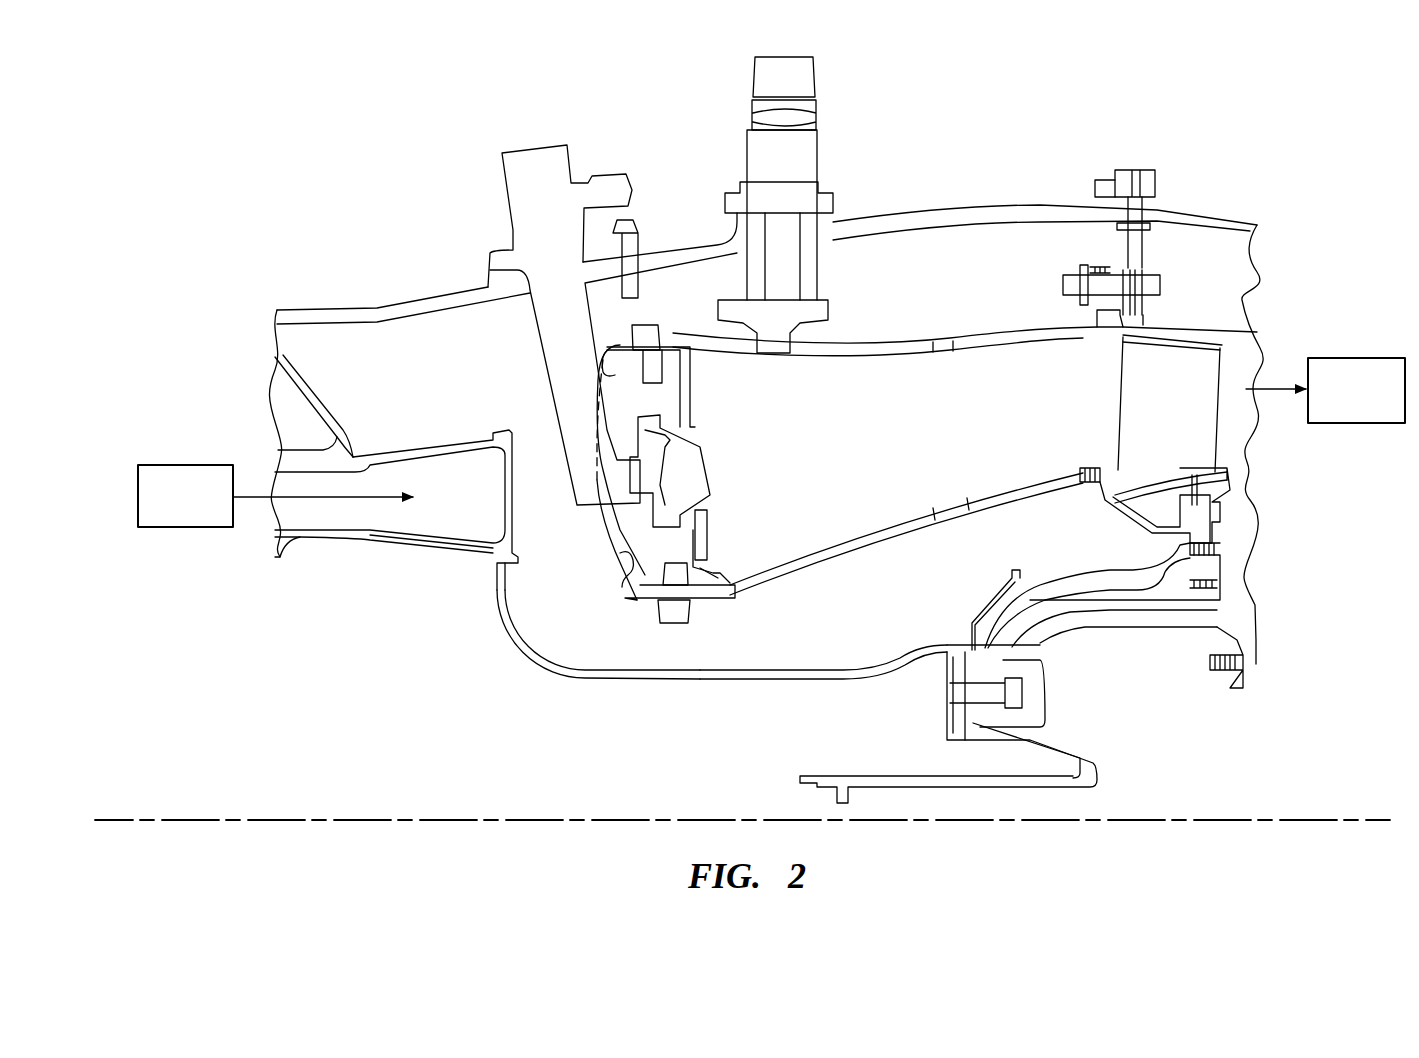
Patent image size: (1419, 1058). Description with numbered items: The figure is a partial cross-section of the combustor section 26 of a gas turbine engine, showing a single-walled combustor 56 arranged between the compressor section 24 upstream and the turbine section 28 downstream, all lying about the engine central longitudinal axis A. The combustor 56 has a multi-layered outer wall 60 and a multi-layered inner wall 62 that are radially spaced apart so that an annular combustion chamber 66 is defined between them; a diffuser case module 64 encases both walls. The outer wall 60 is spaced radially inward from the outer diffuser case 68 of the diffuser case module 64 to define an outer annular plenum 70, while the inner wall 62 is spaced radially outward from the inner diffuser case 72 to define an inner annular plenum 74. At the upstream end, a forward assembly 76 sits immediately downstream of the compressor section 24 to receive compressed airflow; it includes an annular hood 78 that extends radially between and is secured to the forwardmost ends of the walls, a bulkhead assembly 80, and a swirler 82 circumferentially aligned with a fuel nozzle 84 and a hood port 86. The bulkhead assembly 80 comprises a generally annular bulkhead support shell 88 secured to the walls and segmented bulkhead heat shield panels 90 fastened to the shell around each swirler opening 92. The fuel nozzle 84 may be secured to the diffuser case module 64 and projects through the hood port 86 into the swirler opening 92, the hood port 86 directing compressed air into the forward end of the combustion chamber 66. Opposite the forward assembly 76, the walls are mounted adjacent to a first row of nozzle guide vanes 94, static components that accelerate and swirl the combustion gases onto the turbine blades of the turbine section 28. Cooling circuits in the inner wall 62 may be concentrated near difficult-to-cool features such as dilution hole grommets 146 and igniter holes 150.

The compressor section 24 is at (199, 509).
The combustor section 26 is at (1180, 107).
The turbine section 28 is at (1370, 402).
The combustor 56 is at (1095, 128).
The outer wall 60 is at (985, 337).
The inner wall 62 is at (875, 537).
The diffuser case module 64 is at (943, 205).
The annular combustion chamber 66 is at (926, 463).
The outer diffuser case 68 is at (1035, 207).
The outer annular plenum 70 is at (883, 275).
The inner diffuser case 72 is at (795, 692).
The inner annular plenum 74 is at (859, 646).
The forward assembly 76 is at (618, 612).
The annular hood 78 is at (627, 567).
The bulkhead assembly 80 is at (707, 403).
The swirler 82 is at (714, 432).
The fuel nozzle 84 is at (565, 278).
The hood port 86 is at (610, 543).
The bulkhead support shell 88 is at (627, 587).
The bulkhead heat shield 90 is at (713, 540).
The swirler opening 92 is at (710, 507).
The nozzle guide vane 94 is at (1181, 416).
The grommet 146 is at (945, 352).
The igniter hole 150 is at (765, 340).
The engine central longitudinal axis A is at (274, 820).